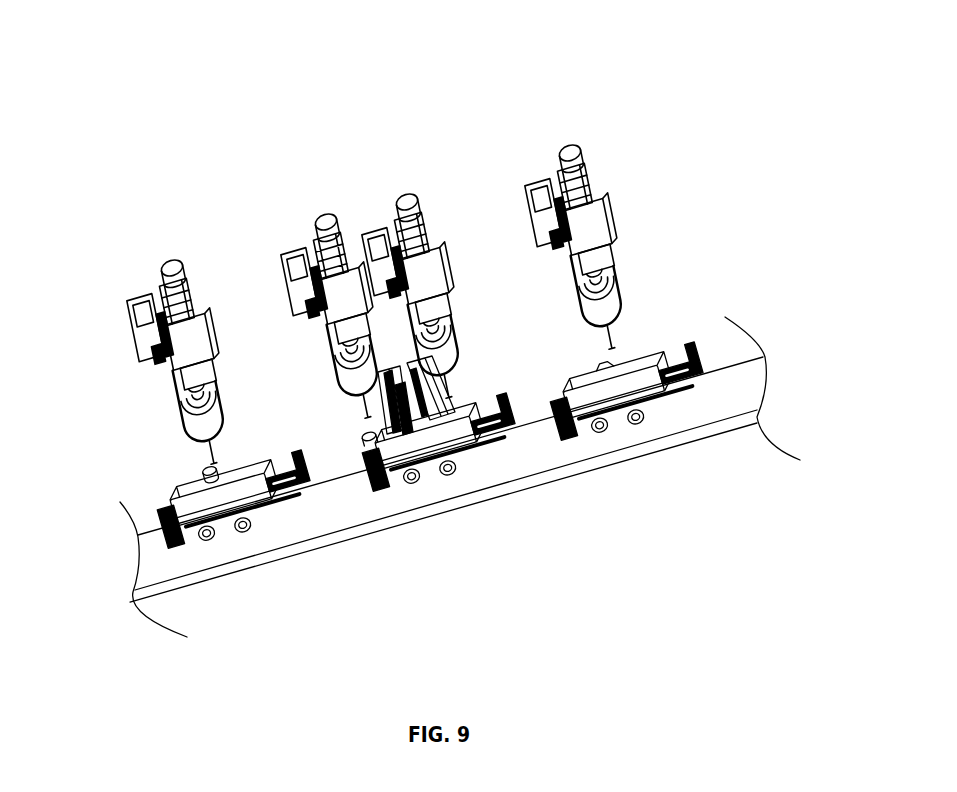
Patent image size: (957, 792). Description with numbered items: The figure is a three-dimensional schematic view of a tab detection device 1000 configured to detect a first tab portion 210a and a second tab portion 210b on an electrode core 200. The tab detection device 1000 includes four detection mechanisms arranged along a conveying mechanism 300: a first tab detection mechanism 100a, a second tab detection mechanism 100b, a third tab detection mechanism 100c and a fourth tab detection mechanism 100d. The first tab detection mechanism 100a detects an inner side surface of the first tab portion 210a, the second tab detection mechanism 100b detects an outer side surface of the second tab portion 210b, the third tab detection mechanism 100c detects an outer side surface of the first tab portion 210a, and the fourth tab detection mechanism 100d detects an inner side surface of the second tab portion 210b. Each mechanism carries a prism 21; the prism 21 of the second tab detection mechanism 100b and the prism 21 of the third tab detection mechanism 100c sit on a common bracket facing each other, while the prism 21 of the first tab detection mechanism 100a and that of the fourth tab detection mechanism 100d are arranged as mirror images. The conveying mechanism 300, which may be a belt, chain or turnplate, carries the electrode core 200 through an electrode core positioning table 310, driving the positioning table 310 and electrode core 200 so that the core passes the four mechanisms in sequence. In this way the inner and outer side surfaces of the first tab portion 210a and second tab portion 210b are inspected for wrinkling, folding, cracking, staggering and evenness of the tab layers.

The tab detection device 1000 is at (402, 62).
The first tab detection mechanism 100a is at (163, 252).
The second tab detection mechanism 100b is at (310, 212).
The third tab detection mechanism 100c is at (407, 190).
The fourth tab detection mechanism 100d is at (550, 153).
The electrode core 200 is at (218, 503).
The first tab portion 210a is at (243, 516).
The second tab portion 210b is at (578, 383).
The prism 21 is at (203, 482).
The conveying mechanism 300 is at (383, 520).
The electrode core positioning table 310 is at (293, 520).